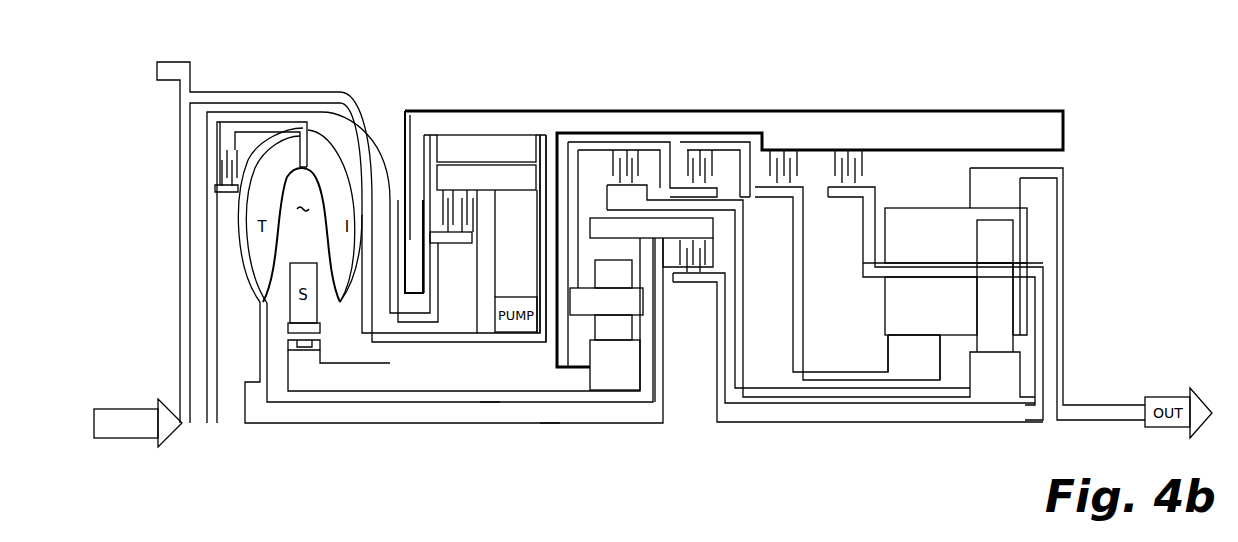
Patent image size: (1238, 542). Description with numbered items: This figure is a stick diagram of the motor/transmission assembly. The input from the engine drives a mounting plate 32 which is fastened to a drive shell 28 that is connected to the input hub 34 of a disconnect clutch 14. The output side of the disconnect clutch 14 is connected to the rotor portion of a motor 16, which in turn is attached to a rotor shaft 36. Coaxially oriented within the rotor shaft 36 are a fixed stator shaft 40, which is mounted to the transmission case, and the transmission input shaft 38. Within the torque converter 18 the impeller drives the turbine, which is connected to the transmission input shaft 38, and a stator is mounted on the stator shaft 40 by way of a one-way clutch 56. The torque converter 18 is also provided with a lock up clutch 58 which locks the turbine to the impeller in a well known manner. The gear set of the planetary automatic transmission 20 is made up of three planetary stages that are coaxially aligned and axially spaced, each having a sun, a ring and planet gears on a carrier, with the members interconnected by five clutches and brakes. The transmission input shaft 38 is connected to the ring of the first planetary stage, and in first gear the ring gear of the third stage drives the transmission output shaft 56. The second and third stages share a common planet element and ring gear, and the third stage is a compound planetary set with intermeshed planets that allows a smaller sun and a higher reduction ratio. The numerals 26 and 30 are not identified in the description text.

The disconnect clutch 14 is at (440, 197).
The motor 16 is at (527, 140).
The torque converter 18 is at (304, 203).
The planetary automatic transmission 20 is at (911, 104).
The transmission gearbox 26 is at (720, 56).
The drive shell 28 is at (244, 92).
The engine 30 is at (150, 408).
The mounting plate 32 is at (180, 288).
The input hub 34 is at (413, 325).
The rotor shaft 36 is at (444, 342).
The transmission input shaft 38 is at (485, 402).
The stator shaft 40 is at (548, 425).
The one-way clutch 56 is at (287, 345).
The lock up clutch 58 is at (222, 173).